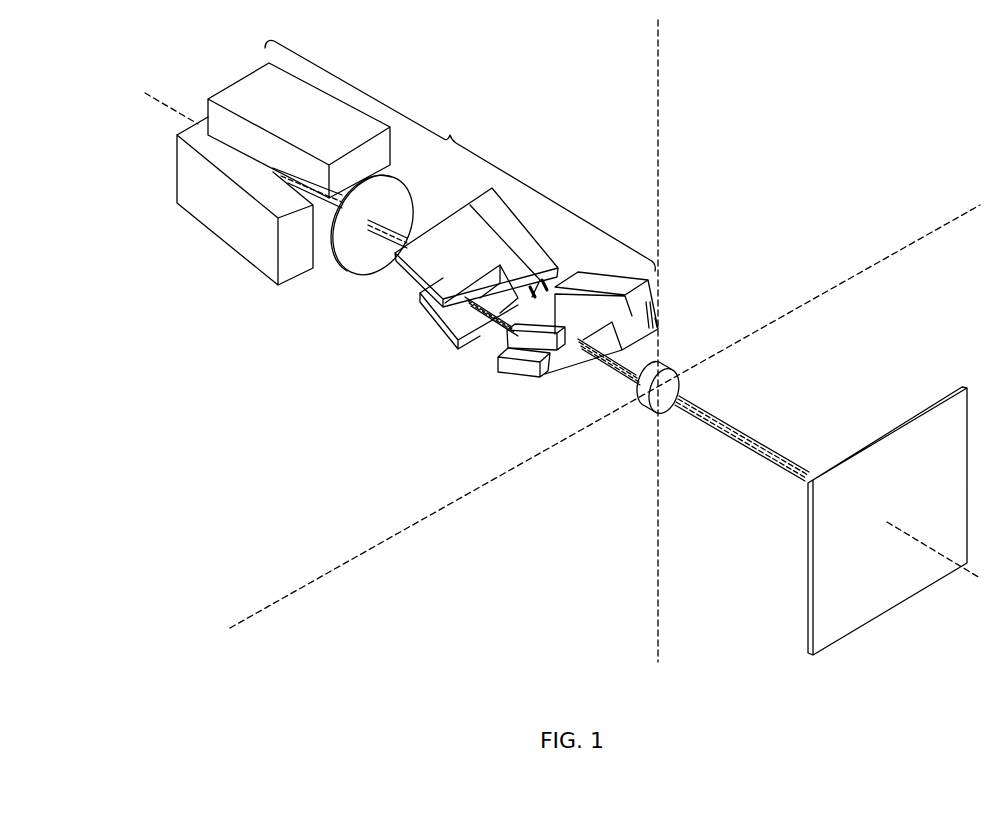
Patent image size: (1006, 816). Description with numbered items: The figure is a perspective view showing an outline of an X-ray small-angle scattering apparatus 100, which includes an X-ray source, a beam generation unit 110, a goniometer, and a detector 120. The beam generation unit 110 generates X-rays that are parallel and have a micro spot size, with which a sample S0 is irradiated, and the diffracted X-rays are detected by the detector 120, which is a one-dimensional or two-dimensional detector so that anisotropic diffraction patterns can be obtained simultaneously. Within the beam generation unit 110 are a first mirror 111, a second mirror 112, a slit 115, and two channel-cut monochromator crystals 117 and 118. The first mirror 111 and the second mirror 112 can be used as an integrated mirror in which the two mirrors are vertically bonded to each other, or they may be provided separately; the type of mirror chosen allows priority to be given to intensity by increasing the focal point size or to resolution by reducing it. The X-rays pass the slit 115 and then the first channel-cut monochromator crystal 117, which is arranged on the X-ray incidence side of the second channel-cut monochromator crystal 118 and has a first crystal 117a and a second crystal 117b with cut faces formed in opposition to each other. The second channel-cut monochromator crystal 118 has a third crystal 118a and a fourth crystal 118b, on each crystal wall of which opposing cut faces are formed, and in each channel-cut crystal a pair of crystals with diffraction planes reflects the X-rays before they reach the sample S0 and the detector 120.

The X-ray small-angle scattering apparatus 100 is at (596, 110).
The beam generation unit 110 is at (417, 233).
The first mirror 111 is at (220, 238).
The second mirror 112 is at (226, 86).
The slit 115 is at (340, 273).
The first channel-cut monochromator crystal 117 is at (464, 284).
The first crystal 117a is at (398, 265).
The second crystal 117b is at (417, 313).
The second channel-cut monochromator crystal 118 is at (556, 350).
The third crystal 118a is at (505, 378).
The fourth crystal 118b is at (505, 350).
The sample S0 is at (637, 405).
The detector 120 is at (827, 653).